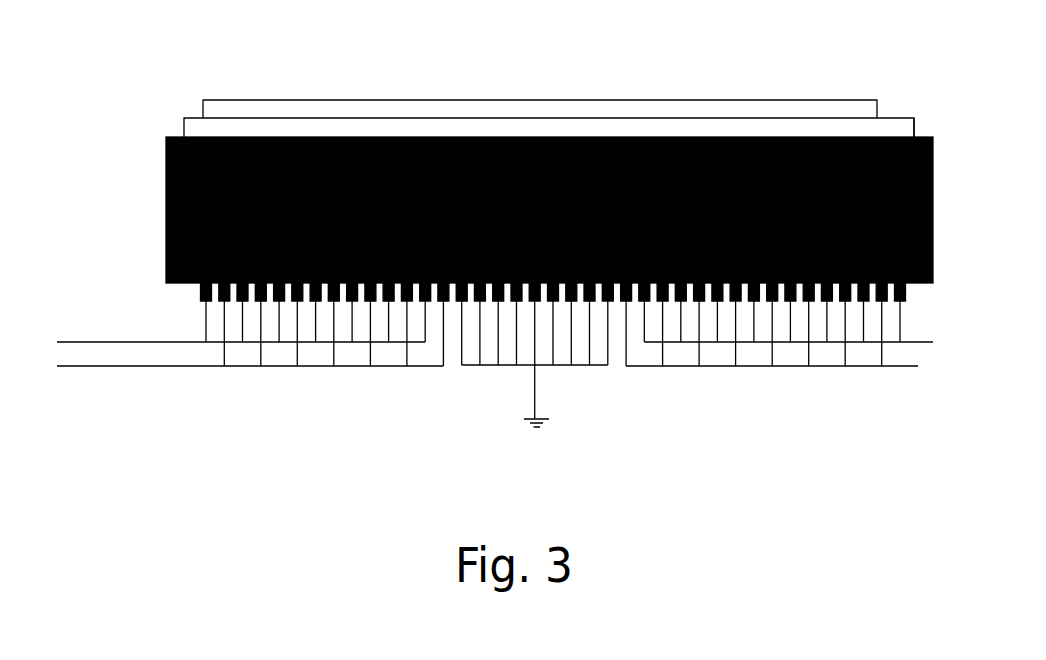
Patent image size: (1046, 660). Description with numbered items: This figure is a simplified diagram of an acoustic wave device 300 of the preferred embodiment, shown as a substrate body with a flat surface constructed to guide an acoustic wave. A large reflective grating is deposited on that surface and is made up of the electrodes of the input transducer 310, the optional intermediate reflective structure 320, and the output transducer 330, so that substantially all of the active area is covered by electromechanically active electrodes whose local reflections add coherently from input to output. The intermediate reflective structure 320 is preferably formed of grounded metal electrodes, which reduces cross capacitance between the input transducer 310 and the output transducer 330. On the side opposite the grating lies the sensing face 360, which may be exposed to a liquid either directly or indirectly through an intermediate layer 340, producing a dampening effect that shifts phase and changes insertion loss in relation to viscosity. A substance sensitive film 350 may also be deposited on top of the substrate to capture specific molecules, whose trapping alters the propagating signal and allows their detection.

The semiconductor package body 300 is at (165, 222).
The input transducer 310 is at (271, 305).
The intermediate reflective structure 320 is at (472, 305).
The output transducer 330 is at (822, 305).
The intermediate layer 340 is at (184, 128).
The substance sensitive film 350 is at (217, 99).
The sensing face 360 is at (924, 128).